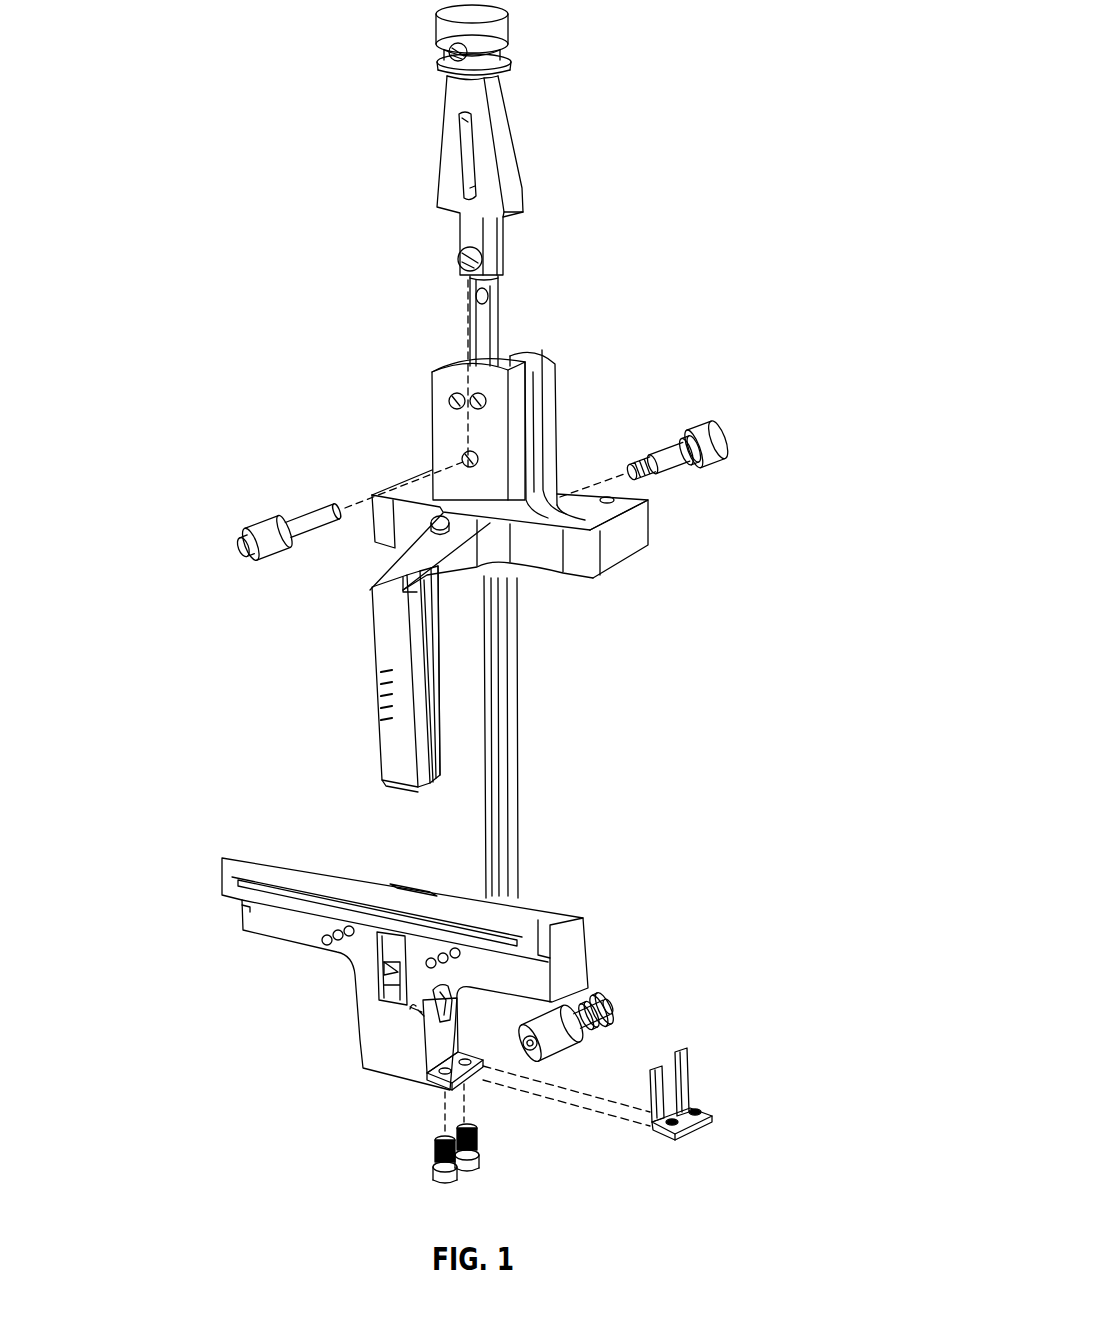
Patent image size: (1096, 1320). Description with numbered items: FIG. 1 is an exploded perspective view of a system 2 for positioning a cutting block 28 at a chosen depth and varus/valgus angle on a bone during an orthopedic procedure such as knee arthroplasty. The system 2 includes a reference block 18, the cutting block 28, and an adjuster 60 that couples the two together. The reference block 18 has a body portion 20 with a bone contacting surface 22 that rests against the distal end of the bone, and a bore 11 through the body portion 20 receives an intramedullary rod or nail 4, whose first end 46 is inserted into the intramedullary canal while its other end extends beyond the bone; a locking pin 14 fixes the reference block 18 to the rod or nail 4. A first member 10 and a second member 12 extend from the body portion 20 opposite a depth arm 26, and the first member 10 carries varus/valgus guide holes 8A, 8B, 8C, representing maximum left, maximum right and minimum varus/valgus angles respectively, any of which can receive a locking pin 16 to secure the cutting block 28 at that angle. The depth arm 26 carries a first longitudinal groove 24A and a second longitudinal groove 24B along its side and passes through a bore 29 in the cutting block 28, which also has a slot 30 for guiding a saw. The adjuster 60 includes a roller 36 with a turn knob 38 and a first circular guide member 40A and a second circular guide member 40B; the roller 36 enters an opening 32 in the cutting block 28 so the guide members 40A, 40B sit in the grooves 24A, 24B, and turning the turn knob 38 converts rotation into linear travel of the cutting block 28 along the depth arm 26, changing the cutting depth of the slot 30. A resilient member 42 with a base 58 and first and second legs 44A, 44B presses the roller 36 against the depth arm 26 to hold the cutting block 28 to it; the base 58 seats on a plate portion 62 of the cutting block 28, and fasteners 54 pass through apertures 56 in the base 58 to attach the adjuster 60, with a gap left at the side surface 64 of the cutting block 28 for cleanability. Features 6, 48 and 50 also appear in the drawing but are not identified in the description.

The system 2 is at (246, 30).
The intramedullary rod or nail 4 is at (508, 165).
The ball detent 6 is at (459, 258).
The varus/valgus guide hole 8A is at (450, 396).
The varus/valgus guide hole 8B is at (487, 401).
The varus/valgus guide hole 8C is at (479, 459).
The first member 10 is at (495, 425).
The bore 11 is at (542, 468).
The second member 12 is at (530, 356).
The locking pin 14 is at (716, 428).
The locking pin 16 is at (280, 518).
The reference block 18 is at (557, 559).
The body portion 20 is at (625, 555).
The bone contacting surface 22 is at (545, 584).
The first longitudinal groove 24A is at (430, 652).
The second longitudinal groove 24B is at (420, 690).
The depth arm 26 is at (365, 681).
The cutting block 28 is at (370, 947).
The bore 29 is at (412, 886).
The slot 30 is at (282, 882).
The opening 32 is at (413, 1014).
The roller 36 is at (562, 1019).
The turn knob 38 is at (514, 1044).
The first circular guide member 40A is at (592, 1002).
The second circular guide member 40B is at (598, 1018).
The resilient member 42 is at (726, 1078).
The first leg 44A is at (690, 1068).
The second leg 44B is at (680, 1092).
The first end 46 is at (532, 890).
The knob 48 is at (522, 40).
The scale 50 is at (370, 692).
The fasteners 54 is at (520, 1136).
The apertures 56 is at (703, 1112).
The base 58 is at (695, 1130).
The adjuster 60 is at (600, 1170).
The plate portion 62 is at (436, 1084).
The side surface 64 is at (407, 1062).